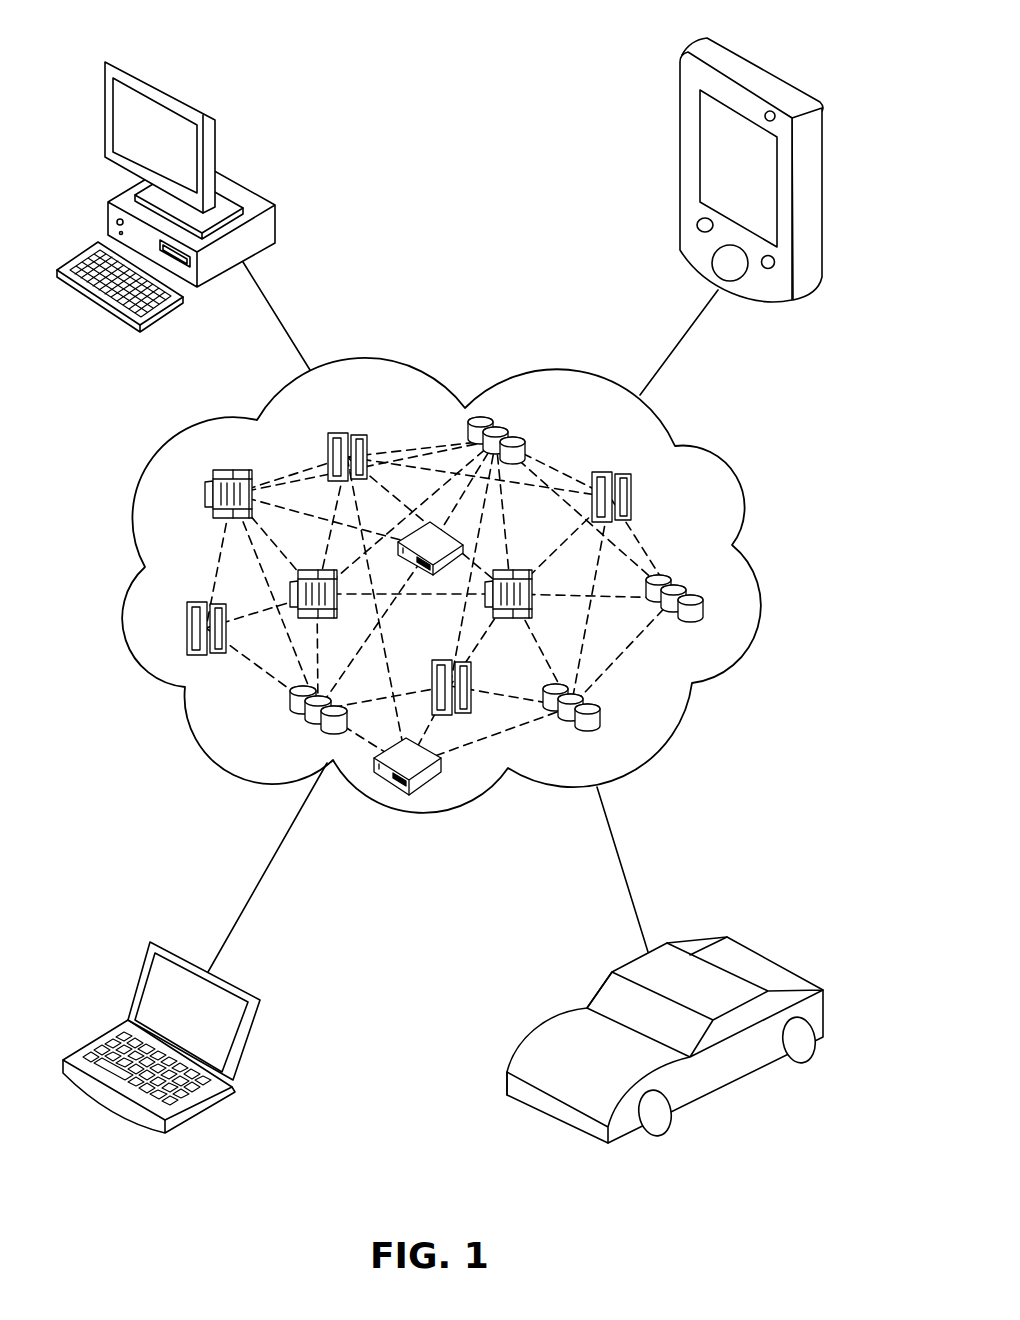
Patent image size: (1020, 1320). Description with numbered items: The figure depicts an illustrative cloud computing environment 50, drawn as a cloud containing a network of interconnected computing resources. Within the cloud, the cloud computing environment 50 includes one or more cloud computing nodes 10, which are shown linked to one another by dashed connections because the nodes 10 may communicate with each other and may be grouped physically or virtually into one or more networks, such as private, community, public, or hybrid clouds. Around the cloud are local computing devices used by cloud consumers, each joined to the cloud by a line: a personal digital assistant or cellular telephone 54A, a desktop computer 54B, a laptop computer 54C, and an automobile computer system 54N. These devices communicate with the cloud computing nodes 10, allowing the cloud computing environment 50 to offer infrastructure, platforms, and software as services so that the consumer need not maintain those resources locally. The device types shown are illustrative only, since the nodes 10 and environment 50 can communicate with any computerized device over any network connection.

The cloud computing nodes 10 is at (677, 521).
The cloud computing environment 50 is at (732, 662).
The personal digital assistant or cellular telephone 54A is at (678, 118).
The desktop computer 54B is at (277, 220).
The laptop computer 54C is at (258, 1010).
The automobile computer system 54N is at (830, 1008).